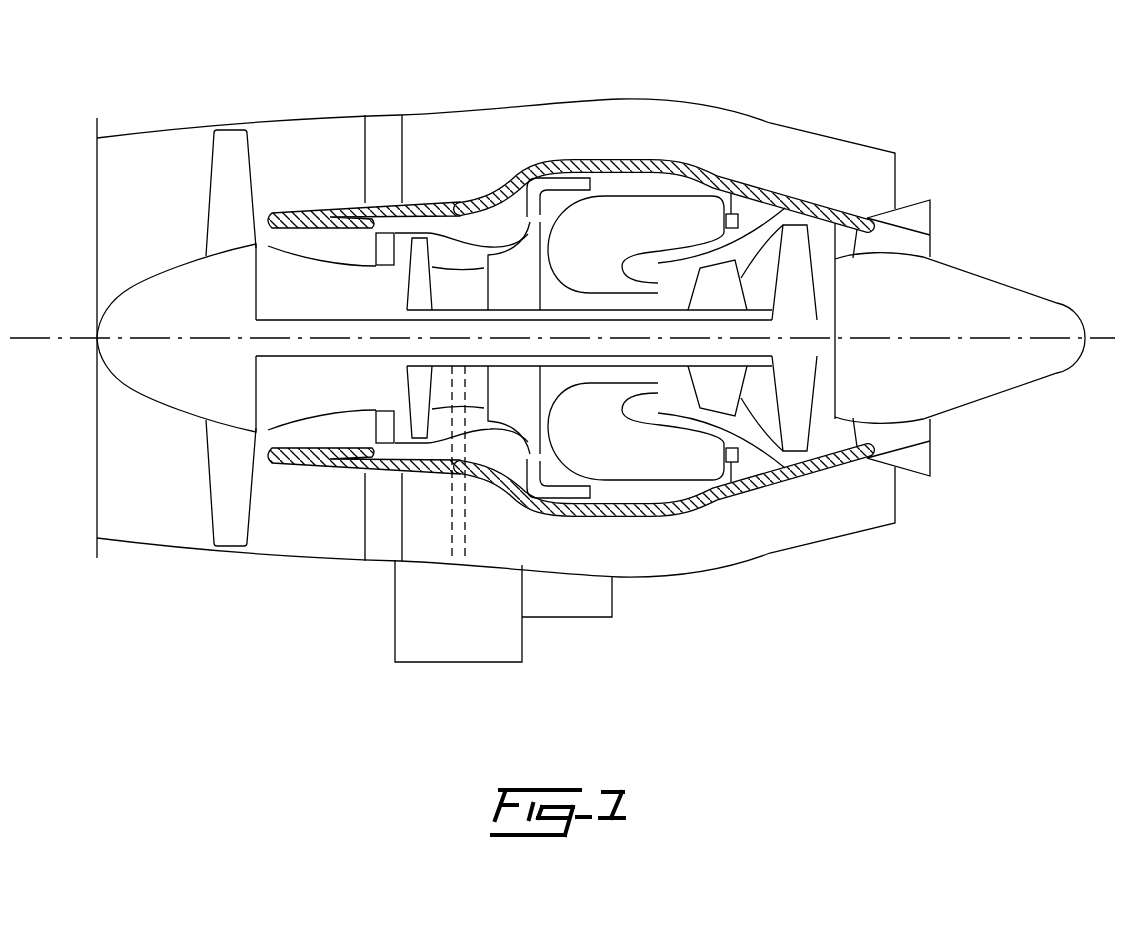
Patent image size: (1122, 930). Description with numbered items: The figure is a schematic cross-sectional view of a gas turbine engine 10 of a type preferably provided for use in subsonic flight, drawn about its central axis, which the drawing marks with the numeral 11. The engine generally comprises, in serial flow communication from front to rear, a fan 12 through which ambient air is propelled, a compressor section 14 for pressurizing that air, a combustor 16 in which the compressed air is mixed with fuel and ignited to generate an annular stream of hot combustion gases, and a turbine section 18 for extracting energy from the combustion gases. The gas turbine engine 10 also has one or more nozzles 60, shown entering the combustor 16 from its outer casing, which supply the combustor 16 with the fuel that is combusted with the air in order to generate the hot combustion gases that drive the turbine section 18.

The gas turbine engine 10 is at (735, 100).
The engine central longitudinal axis 11 is at (1089, 332).
The fan 12 is at (227, 473).
The compressor section 14 is at (448, 250).
The combustor 16 is at (642, 213).
The turbine section 18 is at (758, 397).
The nozzles 60 is at (732, 212).